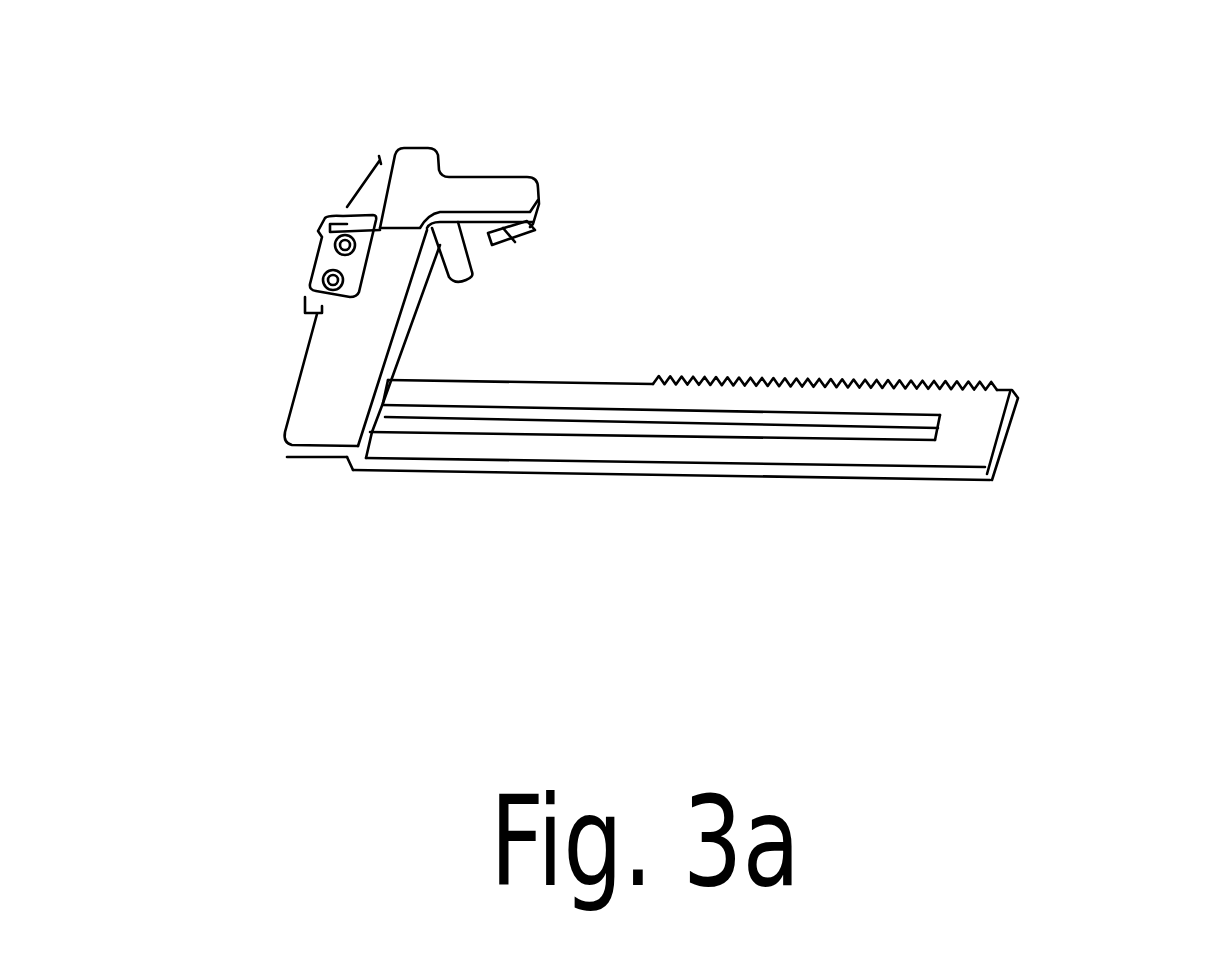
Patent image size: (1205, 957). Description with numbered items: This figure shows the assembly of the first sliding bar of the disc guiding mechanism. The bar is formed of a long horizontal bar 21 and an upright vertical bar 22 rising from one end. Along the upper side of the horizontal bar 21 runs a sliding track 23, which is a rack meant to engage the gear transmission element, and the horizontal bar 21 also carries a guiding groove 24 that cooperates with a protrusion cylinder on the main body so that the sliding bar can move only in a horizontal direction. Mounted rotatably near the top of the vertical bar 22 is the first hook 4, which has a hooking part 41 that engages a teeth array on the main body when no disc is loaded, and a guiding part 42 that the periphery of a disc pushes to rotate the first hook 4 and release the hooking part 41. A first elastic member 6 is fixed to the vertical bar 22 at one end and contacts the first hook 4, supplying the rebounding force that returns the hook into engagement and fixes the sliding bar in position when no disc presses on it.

The horizontal bar 21 is at (973, 443).
The vertical bar 22 is at (357, 368).
The sliding track 23 is at (836, 384).
The guiding groove 24 is at (687, 427).
The first hook 4 is at (422, 182).
The hooking part 41 is at (505, 236).
The guiding part 42 is at (460, 225).
The first elastic member 6 is at (325, 227).